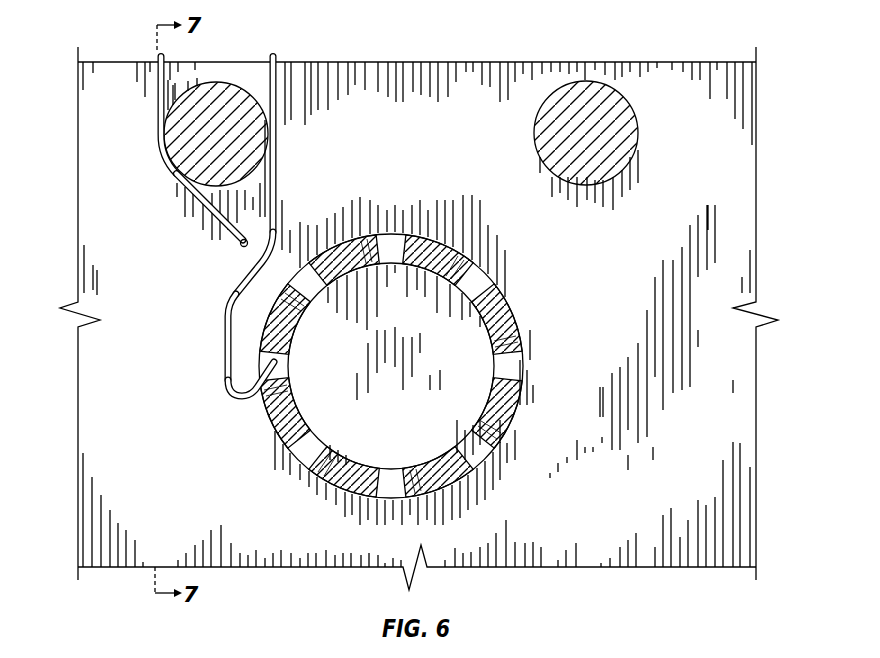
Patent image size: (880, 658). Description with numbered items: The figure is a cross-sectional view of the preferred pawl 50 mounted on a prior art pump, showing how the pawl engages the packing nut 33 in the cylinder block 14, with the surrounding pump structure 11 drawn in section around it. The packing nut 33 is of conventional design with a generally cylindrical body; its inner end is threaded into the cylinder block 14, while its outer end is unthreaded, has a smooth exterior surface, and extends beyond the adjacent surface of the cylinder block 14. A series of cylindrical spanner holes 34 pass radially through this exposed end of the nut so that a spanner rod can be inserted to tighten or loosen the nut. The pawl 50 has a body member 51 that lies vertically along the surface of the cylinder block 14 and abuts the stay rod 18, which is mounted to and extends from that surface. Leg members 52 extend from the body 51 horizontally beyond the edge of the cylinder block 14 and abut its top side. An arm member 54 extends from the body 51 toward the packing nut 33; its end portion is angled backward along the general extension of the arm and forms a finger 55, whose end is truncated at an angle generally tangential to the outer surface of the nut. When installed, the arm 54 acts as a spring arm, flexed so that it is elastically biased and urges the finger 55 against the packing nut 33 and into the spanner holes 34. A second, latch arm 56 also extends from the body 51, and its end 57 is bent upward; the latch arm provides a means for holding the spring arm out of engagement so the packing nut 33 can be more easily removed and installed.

The body / plate 11 is at (518, 60).
The cylinder block 14 is at (707, 170).
The stay rod 18 is at (175, 130).
The packing nut 33 is at (512, 402).
The spanner holes 34 is at (276, 366).
The pawl 50 is at (227, 211).
The body member 51 is at (158, 152).
The leg members 52 is at (277, 56).
The arm member 54 is at (223, 325).
The finger 55 is at (258, 380).
The latch arm 56 is at (180, 196).
The end of latch arm 57 is at (238, 246).